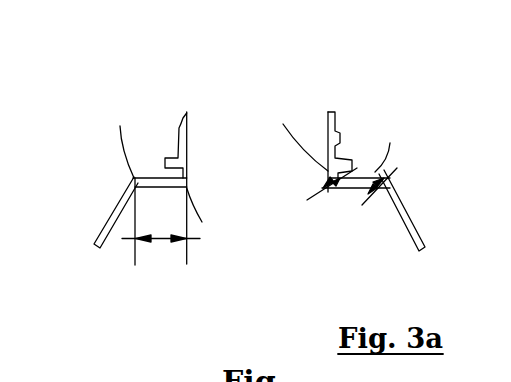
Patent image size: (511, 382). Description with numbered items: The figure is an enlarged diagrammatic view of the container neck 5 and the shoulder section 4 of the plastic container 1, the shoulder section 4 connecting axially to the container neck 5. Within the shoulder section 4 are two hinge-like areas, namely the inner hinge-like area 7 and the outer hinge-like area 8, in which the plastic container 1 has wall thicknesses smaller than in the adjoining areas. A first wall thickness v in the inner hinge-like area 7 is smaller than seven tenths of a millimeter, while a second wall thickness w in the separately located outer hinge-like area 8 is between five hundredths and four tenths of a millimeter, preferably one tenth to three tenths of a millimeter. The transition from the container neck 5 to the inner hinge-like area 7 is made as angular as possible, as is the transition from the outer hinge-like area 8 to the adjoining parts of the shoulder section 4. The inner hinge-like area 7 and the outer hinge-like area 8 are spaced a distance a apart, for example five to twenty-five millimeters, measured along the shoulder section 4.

The plastic container 1 is at (96, 148).
The shoulder section 4 is at (105, 232).
The container neck 5 is at (186, 112).
The inner hinge-like area 7 is at (202, 223).
The outer hinge-like area 8 is at (125, 123).
The distance a is at (161, 242).
The first wall thickness v is at (325, 141).
The second wall thickness w is at (393, 174).